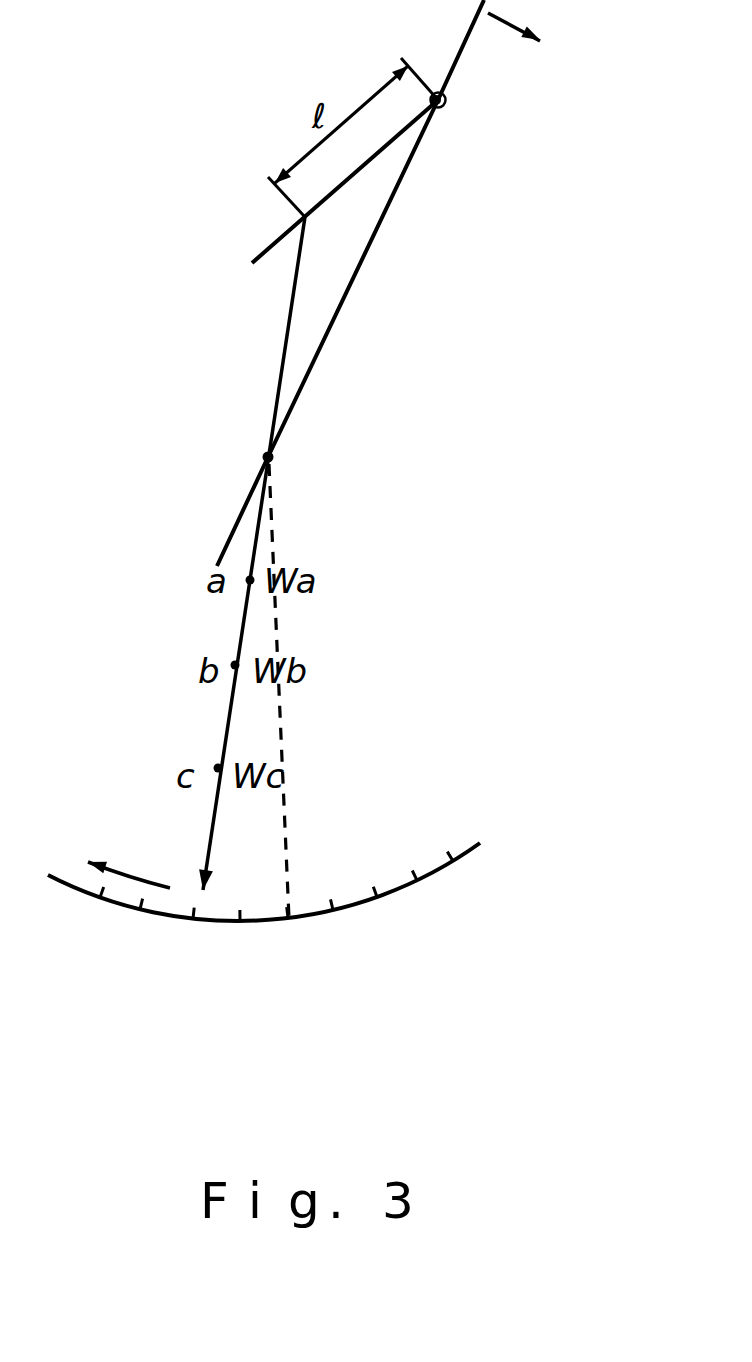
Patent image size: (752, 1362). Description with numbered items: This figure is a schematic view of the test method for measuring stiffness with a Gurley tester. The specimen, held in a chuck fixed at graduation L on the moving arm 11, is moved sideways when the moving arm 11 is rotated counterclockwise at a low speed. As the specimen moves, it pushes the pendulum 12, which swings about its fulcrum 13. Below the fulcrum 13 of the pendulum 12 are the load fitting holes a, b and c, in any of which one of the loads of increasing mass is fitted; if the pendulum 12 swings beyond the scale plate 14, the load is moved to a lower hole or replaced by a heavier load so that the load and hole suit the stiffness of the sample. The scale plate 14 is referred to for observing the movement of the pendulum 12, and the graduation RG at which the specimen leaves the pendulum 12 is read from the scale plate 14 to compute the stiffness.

The moving arm 11 is at (357, 292).
The pendulum 12 is at (277, 359).
The fulcrum of the pendulum 13 is at (282, 457).
The scale plate 14 is at (345, 880).